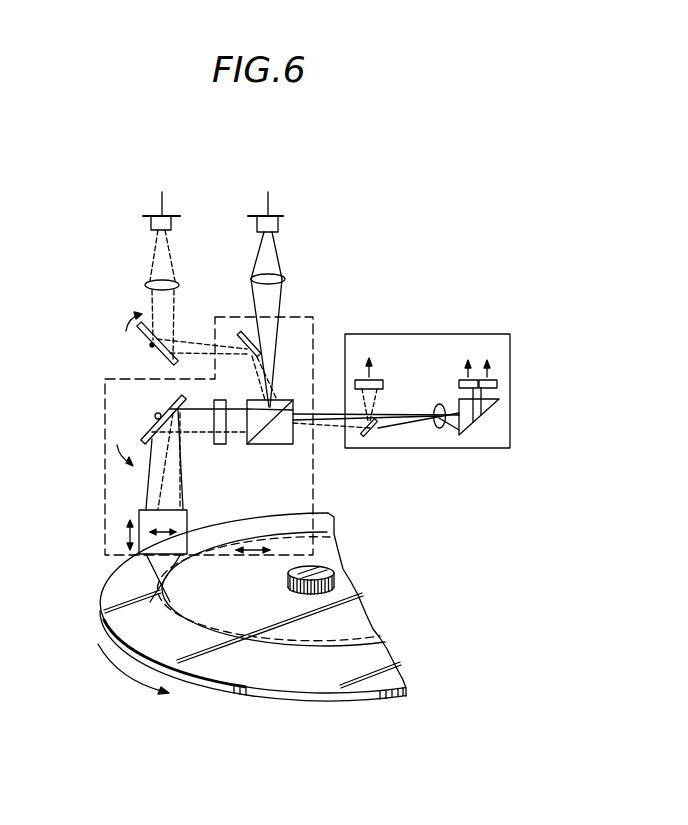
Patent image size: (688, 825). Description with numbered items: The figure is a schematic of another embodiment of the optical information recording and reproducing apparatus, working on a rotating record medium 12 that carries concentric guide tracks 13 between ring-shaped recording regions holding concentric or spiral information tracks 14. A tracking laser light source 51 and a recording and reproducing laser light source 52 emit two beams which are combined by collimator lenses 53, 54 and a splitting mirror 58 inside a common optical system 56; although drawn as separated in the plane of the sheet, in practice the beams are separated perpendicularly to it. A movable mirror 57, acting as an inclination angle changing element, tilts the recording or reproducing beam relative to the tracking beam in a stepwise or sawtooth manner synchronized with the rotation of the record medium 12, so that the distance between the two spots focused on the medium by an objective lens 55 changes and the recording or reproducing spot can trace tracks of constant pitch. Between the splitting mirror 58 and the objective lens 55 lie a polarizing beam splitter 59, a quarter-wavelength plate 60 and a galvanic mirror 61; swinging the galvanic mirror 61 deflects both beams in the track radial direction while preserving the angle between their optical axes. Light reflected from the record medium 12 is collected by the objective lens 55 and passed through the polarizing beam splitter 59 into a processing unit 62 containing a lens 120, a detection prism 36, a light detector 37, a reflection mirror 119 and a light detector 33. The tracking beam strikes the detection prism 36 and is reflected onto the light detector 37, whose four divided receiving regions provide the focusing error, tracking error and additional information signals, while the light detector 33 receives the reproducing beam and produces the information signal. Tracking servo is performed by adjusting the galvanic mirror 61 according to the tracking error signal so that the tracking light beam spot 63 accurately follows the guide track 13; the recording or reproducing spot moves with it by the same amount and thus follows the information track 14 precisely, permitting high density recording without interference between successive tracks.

The record medium 12 is at (130, 622).
The guide track 13 is at (216, 643).
The information track 14 is at (308, 645).
The light detector 33 is at (383, 377).
The detection prism 36 is at (492, 408).
The light detector 37 is at (497, 371).
The tracking laser light source 51 is at (280, 222).
The recording and reproducing laser light source 52 is at (148, 222).
The collimator lens 53 is at (288, 277).
The collimator lens 54 is at (148, 280).
The objective lens 55 is at (140, 513).
The common optical system 56 is at (320, 489).
The movable mirror 57 is at (143, 337).
The splitting mirror 58 is at (242, 328).
The polarizing beam splitter 59 is at (283, 443).
The quarter-wavelength plate 60 is at (222, 443).
The galvanic mirror 61 is at (140, 428).
The processing unit 62 is at (546, 312).
The tracking light beam spot 63 is at (108, 594).
The reflection mirror 119 is at (372, 427).
The lens 120 is at (441, 428).